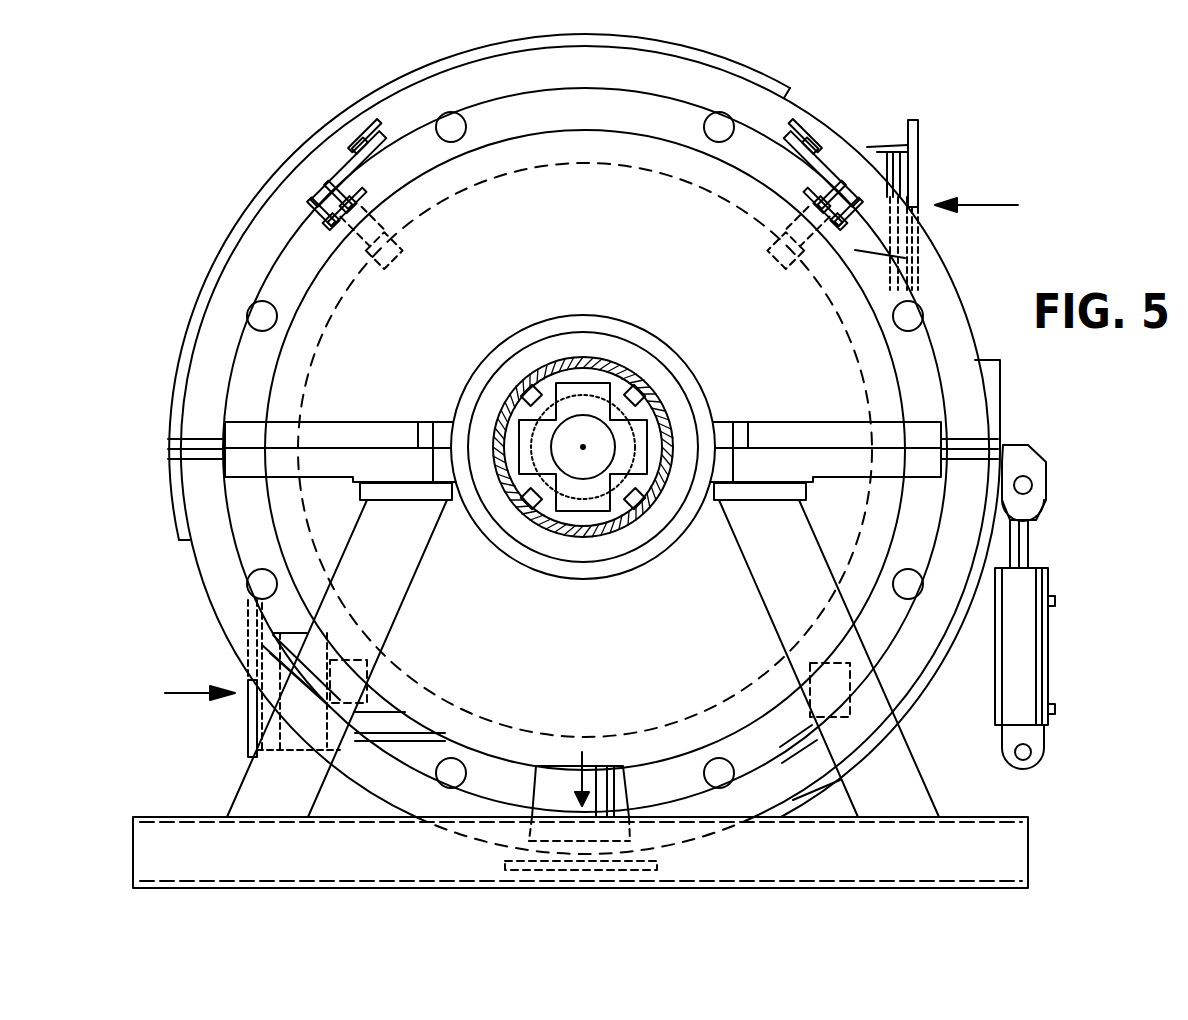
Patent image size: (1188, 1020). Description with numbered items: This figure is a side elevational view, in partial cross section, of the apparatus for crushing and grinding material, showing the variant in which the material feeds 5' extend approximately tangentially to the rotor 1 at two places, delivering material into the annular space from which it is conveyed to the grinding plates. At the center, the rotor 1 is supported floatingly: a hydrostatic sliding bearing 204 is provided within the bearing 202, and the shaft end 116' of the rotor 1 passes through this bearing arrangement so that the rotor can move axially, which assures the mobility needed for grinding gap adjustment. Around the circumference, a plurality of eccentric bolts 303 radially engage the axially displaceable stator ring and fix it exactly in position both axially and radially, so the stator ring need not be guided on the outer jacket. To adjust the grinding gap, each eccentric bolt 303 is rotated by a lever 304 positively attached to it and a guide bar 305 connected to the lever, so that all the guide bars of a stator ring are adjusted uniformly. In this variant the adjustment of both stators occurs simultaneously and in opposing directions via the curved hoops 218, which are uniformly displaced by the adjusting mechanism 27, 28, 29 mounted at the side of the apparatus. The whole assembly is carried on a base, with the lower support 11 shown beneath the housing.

The rotor 1 is at (833, 380).
The material feed 5' is at (591, 438).
The base foot 11 is at (556, 790).
The adjusting mechanism 27 is at (1008, 448).
The adjusting mechanism 28 is at (1032, 548).
The adjusting mechanism 29 is at (1040, 660).
The spider bar / hub shaft 116' is at (583, 566).
The bearing 202 is at (611, 357).
The hydrostatic sliding bearing 204 is at (641, 413).
The curved hoop 218 is at (179, 360).
The eccentric bolt 303 is at (370, 252).
The lever 304 is at (323, 212).
The guide bar 305 is at (352, 162).